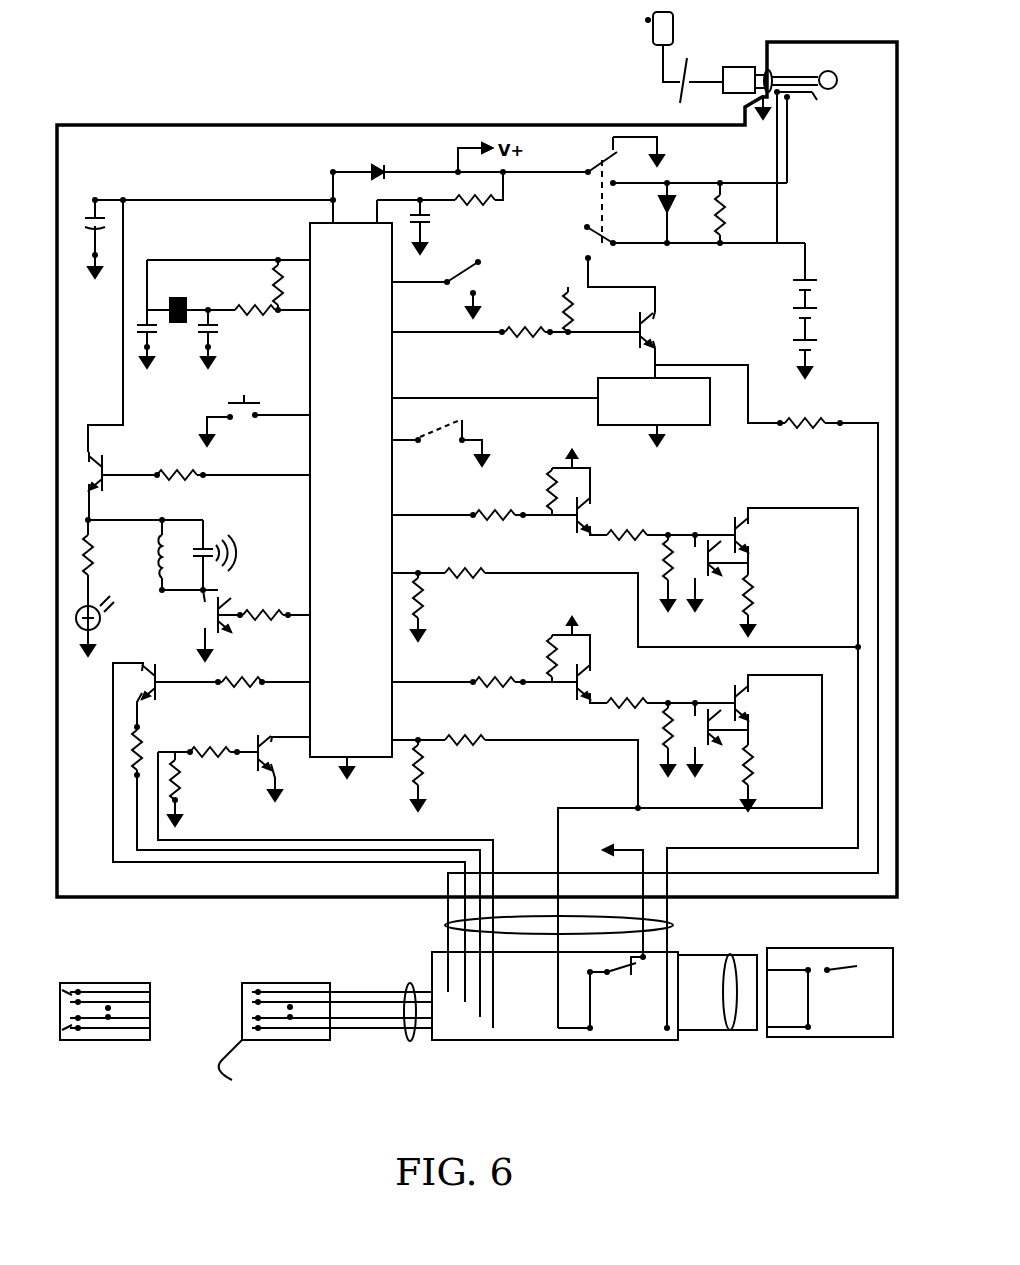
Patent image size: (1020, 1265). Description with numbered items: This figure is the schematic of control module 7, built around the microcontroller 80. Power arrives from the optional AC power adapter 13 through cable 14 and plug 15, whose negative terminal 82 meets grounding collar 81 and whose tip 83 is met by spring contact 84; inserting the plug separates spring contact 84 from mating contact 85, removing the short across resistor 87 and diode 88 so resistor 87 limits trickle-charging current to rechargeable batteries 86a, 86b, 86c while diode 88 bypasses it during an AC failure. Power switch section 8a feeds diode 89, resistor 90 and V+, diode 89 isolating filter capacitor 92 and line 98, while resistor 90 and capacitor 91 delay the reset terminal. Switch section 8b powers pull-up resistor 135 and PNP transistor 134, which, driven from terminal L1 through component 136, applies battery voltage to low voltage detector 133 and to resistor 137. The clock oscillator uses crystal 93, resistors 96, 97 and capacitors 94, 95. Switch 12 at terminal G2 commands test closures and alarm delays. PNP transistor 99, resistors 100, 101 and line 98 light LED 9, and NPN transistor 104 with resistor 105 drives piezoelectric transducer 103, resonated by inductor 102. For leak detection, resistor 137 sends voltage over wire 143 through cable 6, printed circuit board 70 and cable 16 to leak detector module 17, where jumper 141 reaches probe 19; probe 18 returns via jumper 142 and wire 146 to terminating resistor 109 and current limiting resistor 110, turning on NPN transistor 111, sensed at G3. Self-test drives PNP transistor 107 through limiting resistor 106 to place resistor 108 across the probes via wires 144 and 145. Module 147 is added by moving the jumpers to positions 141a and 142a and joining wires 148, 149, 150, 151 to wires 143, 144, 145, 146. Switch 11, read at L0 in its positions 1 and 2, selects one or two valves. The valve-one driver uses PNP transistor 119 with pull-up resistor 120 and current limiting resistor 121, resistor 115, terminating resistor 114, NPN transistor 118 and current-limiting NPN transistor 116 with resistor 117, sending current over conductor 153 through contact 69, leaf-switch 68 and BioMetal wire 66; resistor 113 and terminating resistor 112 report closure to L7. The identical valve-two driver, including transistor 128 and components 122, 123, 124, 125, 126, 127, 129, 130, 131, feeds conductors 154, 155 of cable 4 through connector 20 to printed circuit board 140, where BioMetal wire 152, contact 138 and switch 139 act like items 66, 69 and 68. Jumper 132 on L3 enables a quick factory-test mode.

The valve 1 position 1 is at (486, 258).
The valve 2 position 2 is at (482, 299).
The cable 4 is at (732, 1030).
The cable 6 is at (446, 922).
The control module 7 is at (370, 125).
The power switch section 8a is at (616, 168).
The power switch section 8b is at (608, 253).
The LED 9 is at (96, 630).
The switch 11 is at (462, 286).
The switch 12 is at (250, 418).
The AC power adapter 13 is at (673, 28).
The cable 14 is at (662, 70).
The plug 15 is at (738, 67).
The cable 16 is at (408, 1042).
The leak detector module 17 is at (224, 1083).
The leak detector probe 18 is at (290, 1020).
The leak detector probe 19 is at (290, 1005).
The connector 20 is at (763, 955).
The BioMetal wire 66 is at (590, 1028).
The leaf-switch 68 is at (630, 978).
The contact 69 is at (590, 973).
The printed circuit board 70 is at (508, 1040).
The microcontroller 80 is at (392, 370).
The grounding collar 81 is at (770, 52).
The negative terminal 82 is at (775, 78).
The tip 83 is at (837, 80).
The spring contact 84 is at (820, 95).
The mating contact 85 is at (786, 100).
The rechargeable battery 86a is at (826, 278).
The rechargeable battery 86b is at (826, 316).
The rechargeable battery 86c is at (826, 350).
The resistor 87 is at (728, 228).
The diode 88 is at (676, 195).
The diode 89 is at (384, 168).
The resistor 90 is at (468, 202).
The capacitor 91 is at (426, 224).
The filter capacitor 92 is at (83, 208).
The crystal 93 is at (186, 298).
The capacitor 94 is at (156, 336).
The capacitor 95 is at (222, 336).
The resistor 96 is at (246, 315).
The resistor 97 is at (274, 279).
The line 98 is at (110, 352).
The PNP transistor 99 is at (106, 463).
The current limiting resistor 100 is at (90, 550).
The resistor 101 is at (190, 470).
The inductor 102 is at (197, 518).
The piezoelectric transducer 103 is at (224, 550).
The NPN transistor 104 is at (212, 612).
The resistor 105 is at (256, 614).
The limiting resistor 106 is at (228, 680).
The PNP transistor 107 is at (156, 700).
The resistor 108 is at (132, 758).
The terminating resistor 109 is at (178, 778).
The current limiting resistor 110 is at (216, 746).
The NPN transistor 111 is at (275, 765).
The terminating resistor 112 is at (428, 763).
The resistor 113 is at (470, 740).
The terminating resistor 114 is at (666, 730).
The resistor 115 is at (644, 700).
The NPN transistor 116 is at (715, 748).
The resistor 117 is at (748, 757).
The NPN transistor 118 is at (740, 704).
The PNP transistor 119 is at (590, 692).
The pull-up resistor 120 is at (542, 650).
The current limiting resistor 121 is at (480, 676).
The resistor 122 is at (426, 602).
The resistor 123 is at (470, 572).
The transistor 124 is at (745, 584).
The resistor 125 is at (738, 592).
The resistor 126 is at (662, 560).
The resistor 127 is at (634, 530).
The transistor 128 is at (748, 533).
The transistor 129 is at (590, 511).
The resistor 130 is at (546, 490).
The resistor 131 is at (480, 504).
The jumper 132 is at (464, 423).
The low voltage detector 133 is at (694, 425).
The PNP transistor 134 is at (652, 330).
The pull-up resistor 135 is at (574, 310).
The resistor 136 is at (530, 335).
The resistor 137 is at (807, 423).
The switch component 138 is at (852, 964).
The switch component 139 is at (813, 978).
The printed circuit board 140 is at (795, 1037).
The jumper 141 is at (246, 982).
The jumper position 141a is at (62, 984).
The jumper 142 is at (251, 1042).
The jumper position 142a is at (62, 1040).
The wire 143 is at (340, 998).
The wire 144 is at (360, 997).
The wire 145 is at (368, 1026).
The wire 146 is at (338, 1028).
The leak detection module 147 is at (100, 1040).
The wire 148 is at (150, 992).
The wire 149 is at (150, 1002).
The wire 150 is at (150, 1018).
The wire 151 is at (150, 1028).
The BioMetal wire 152 is at (810, 1027).
The conductor 153 is at (643, 850).
The conductor 154 is at (685, 1030).
The conductor 155 is at (692, 960).